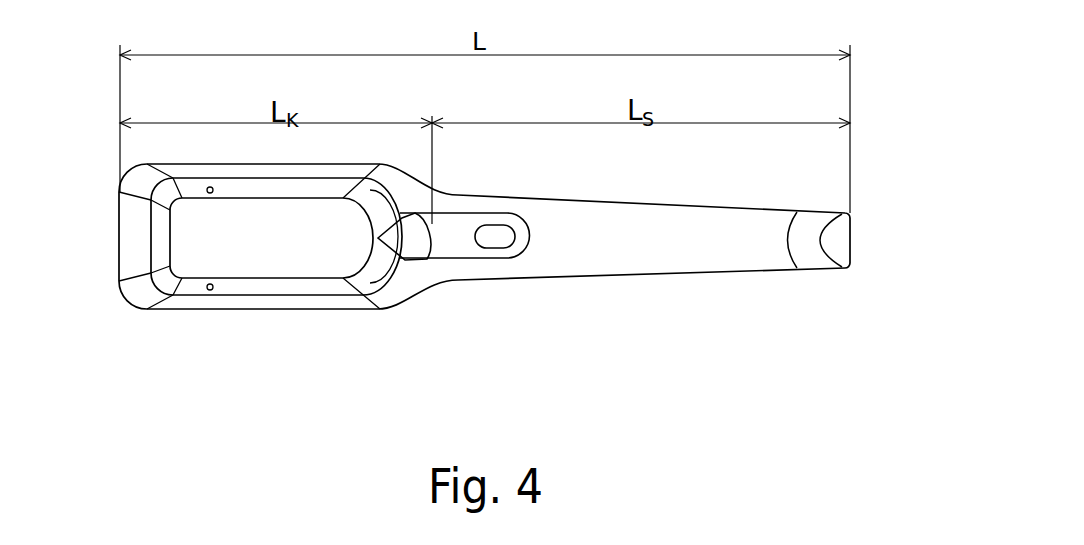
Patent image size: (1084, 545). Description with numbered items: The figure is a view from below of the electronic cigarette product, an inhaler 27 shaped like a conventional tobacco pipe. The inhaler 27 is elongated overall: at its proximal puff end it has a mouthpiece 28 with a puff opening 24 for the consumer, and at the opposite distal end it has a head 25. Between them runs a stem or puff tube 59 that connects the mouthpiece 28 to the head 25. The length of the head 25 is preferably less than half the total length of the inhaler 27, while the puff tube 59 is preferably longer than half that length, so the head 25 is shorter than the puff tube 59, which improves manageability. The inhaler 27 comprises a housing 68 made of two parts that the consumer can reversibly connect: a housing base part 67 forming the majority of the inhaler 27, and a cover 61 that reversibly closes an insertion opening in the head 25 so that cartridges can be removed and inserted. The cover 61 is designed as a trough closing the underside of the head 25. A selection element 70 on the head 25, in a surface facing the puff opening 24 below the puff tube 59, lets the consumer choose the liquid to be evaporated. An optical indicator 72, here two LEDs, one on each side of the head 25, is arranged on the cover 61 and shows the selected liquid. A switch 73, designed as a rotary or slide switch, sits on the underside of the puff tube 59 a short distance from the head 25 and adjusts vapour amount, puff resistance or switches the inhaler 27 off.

The puff opening 24 is at (848, 240).
The head 25 is at (257, 318).
The inhaler 27 is at (438, 322).
The mouthpiece 28 is at (812, 270).
The puff tube 59 is at (640, 284).
The cover 61 is at (158, 240).
The housing base part 67 is at (303, 311).
The housing 68 is at (477, 288).
The selection element 70 is at (415, 240).
The optical indicator 72 is at (208, 188).
The switch 73 is at (495, 238).